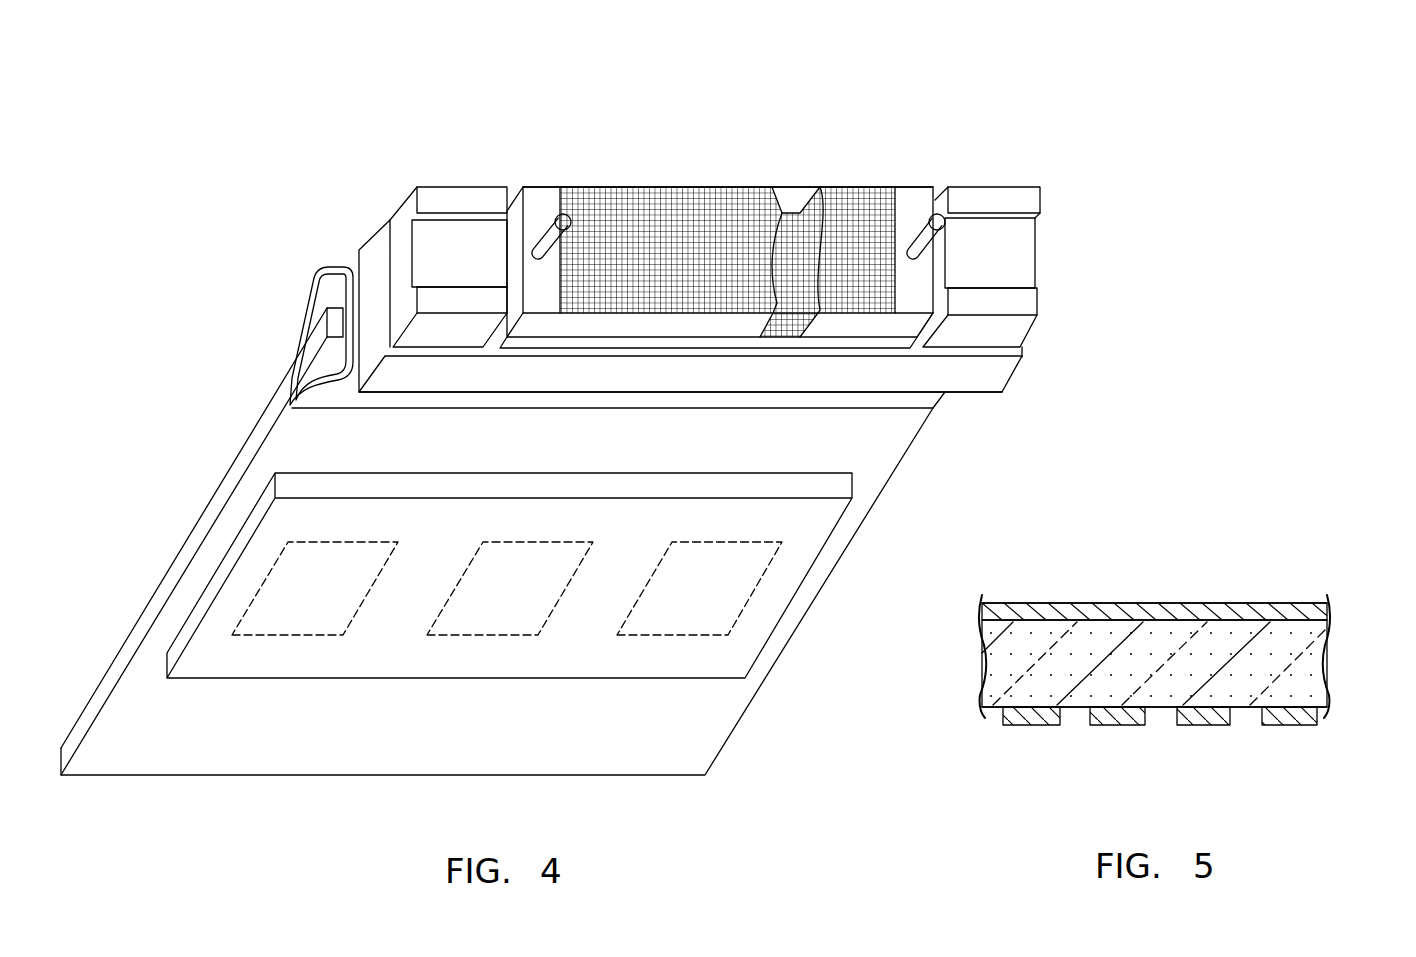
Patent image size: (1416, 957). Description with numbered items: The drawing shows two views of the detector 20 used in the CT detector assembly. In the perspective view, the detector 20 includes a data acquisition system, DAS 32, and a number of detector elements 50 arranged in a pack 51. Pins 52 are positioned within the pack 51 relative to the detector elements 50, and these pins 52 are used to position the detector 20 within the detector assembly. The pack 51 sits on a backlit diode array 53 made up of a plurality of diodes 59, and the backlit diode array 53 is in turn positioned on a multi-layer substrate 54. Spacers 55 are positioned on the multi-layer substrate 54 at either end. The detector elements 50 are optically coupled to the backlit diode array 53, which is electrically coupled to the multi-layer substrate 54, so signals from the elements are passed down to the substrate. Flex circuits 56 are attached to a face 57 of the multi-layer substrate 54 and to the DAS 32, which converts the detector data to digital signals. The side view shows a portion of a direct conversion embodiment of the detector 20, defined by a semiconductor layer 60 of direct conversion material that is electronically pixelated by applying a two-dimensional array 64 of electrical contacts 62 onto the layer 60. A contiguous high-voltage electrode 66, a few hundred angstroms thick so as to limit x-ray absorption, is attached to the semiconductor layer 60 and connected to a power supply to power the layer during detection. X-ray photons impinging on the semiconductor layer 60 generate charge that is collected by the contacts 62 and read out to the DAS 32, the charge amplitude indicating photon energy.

In FIG. 4, the detector 20 is at (952, 141).
In FIG. 5, the detector 20 is at (1313, 553).
In FIG. 4, the data acquisition system 32 is at (803, 600).
In FIG. 4, the detector elements 50 is at (647, 187).
In FIG. 4, the pack 51 is at (561, 152).
In FIG. 4, the pins 52 is at (513, 187).
In FIG. 4, the backlit diode array 53 is at (890, 345).
In FIG. 4, the multi-layer substrate 54 is at (1000, 373).
In FIG. 4, the spacers 55 is at (451, 187).
In FIG. 4, the flex circuits 56 is at (293, 375).
In FIG. 4, the face 57 is at (357, 258).
In FIG. 4, the diodes 59 is at (800, 212).
In FIG. 5, the semiconductor layer 60 is at (1318, 663).
In FIG. 5, the electrical contacts 62 is at (1275, 727).
In FIG. 5, the 2D array 64 is at (990, 738).
In FIG. 5, the high-voltage electrode 66 is at (980, 616).